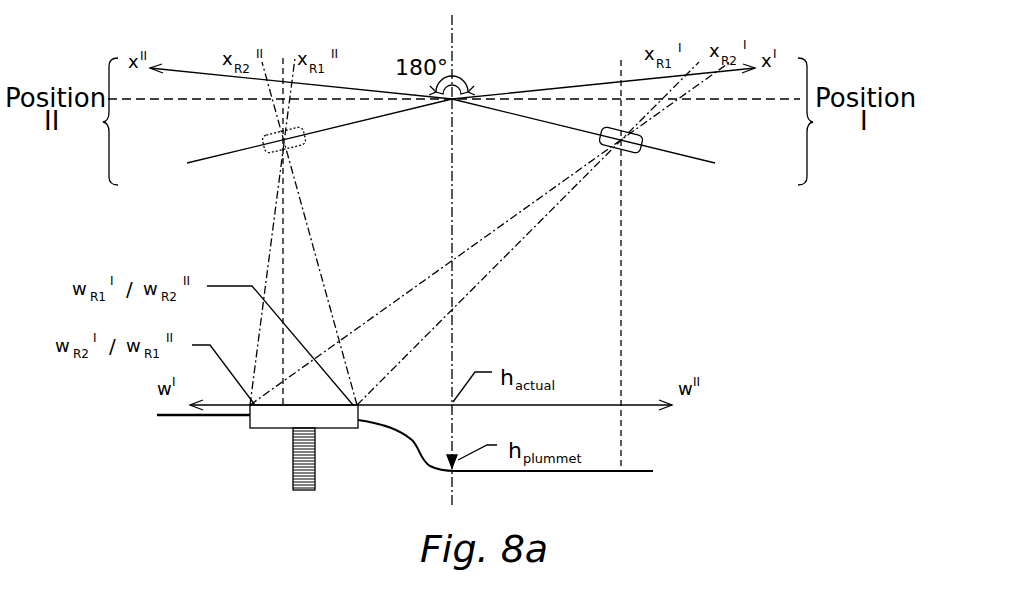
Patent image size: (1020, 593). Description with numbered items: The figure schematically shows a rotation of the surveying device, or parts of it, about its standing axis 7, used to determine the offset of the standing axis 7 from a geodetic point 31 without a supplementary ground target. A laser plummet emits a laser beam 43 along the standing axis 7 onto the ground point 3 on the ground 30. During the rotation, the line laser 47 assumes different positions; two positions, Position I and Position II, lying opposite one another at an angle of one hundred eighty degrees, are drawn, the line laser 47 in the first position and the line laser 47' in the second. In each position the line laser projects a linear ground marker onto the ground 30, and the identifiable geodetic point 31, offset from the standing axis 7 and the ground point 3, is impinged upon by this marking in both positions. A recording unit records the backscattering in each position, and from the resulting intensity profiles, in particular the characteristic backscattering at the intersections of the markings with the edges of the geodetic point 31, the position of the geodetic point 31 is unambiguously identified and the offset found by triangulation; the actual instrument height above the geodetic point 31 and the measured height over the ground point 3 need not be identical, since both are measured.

The standing axis 7 is at (483, 57).
The laser beam 43 is at (491, 303).
The line laser 47 is at (657, 138).
The line laser 47' is at (245, 134).
The geodetic point 31 is at (285, 447).
The ground 30 is at (175, 436).
The ground point 3 is at (505, 458).